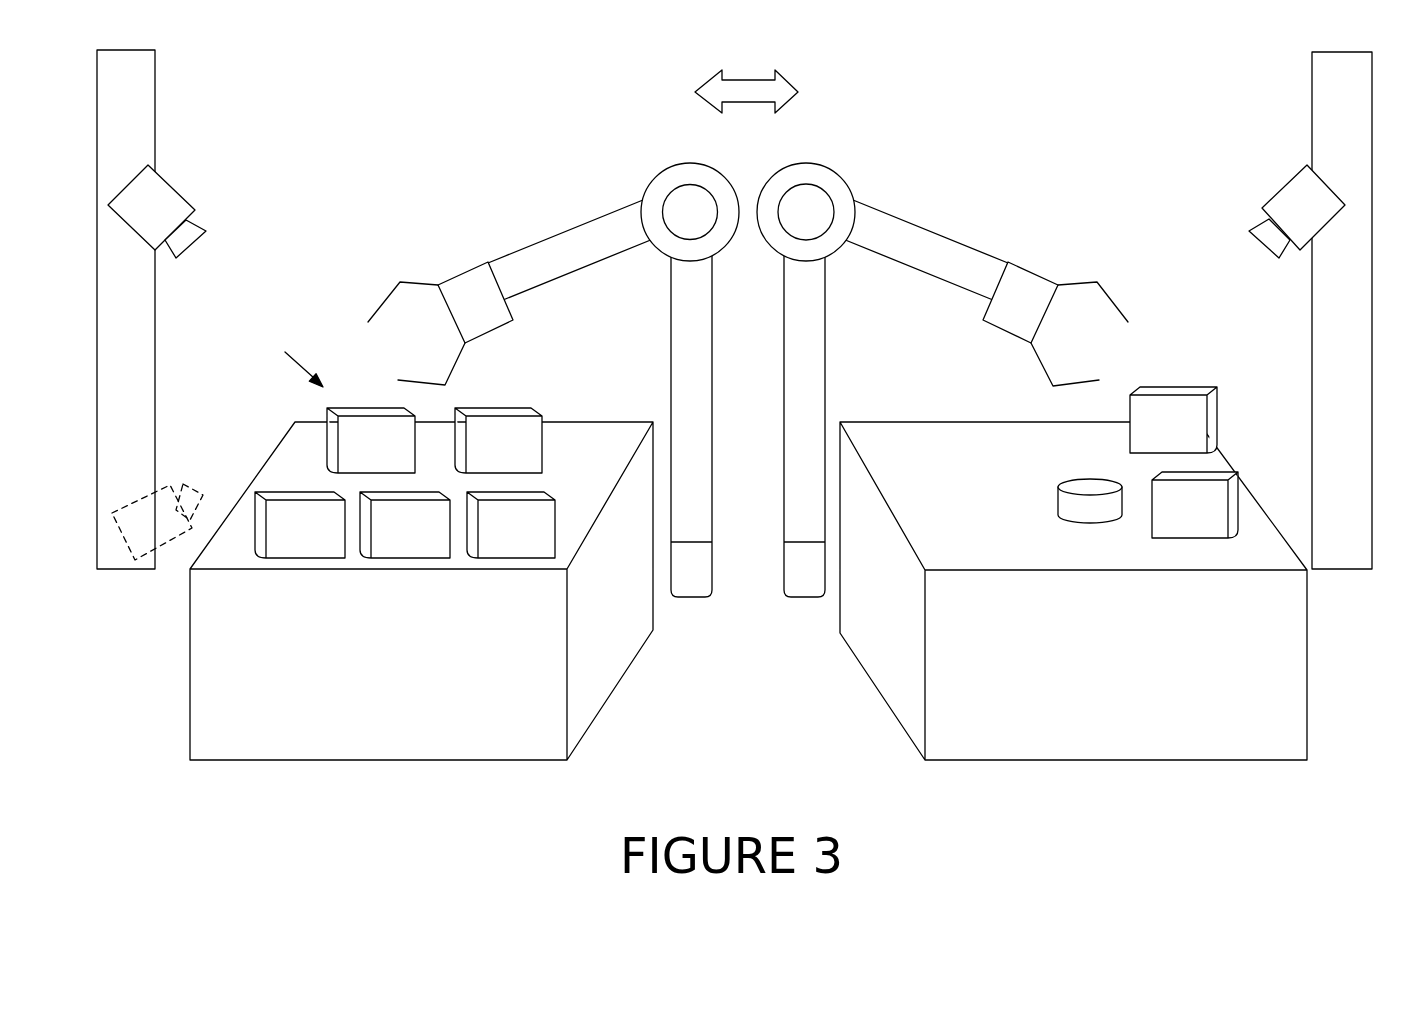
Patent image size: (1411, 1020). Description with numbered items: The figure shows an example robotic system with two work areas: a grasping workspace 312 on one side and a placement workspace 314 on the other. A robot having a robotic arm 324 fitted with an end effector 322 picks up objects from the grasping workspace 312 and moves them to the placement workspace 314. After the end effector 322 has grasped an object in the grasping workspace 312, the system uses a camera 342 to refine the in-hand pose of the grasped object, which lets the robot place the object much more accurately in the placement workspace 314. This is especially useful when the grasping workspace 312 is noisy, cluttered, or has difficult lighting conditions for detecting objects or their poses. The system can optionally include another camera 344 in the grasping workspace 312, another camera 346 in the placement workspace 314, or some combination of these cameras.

The grasping workspace 312 is at (592, 101).
The placement workspace 314 is at (1208, 101).
The end effector 322 is at (455, 232).
The robotic arm 324 is at (629, 184).
The camera 342 is at (205, 180).
The camera 344 is at (160, 597).
The camera 346 is at (1270, 182).